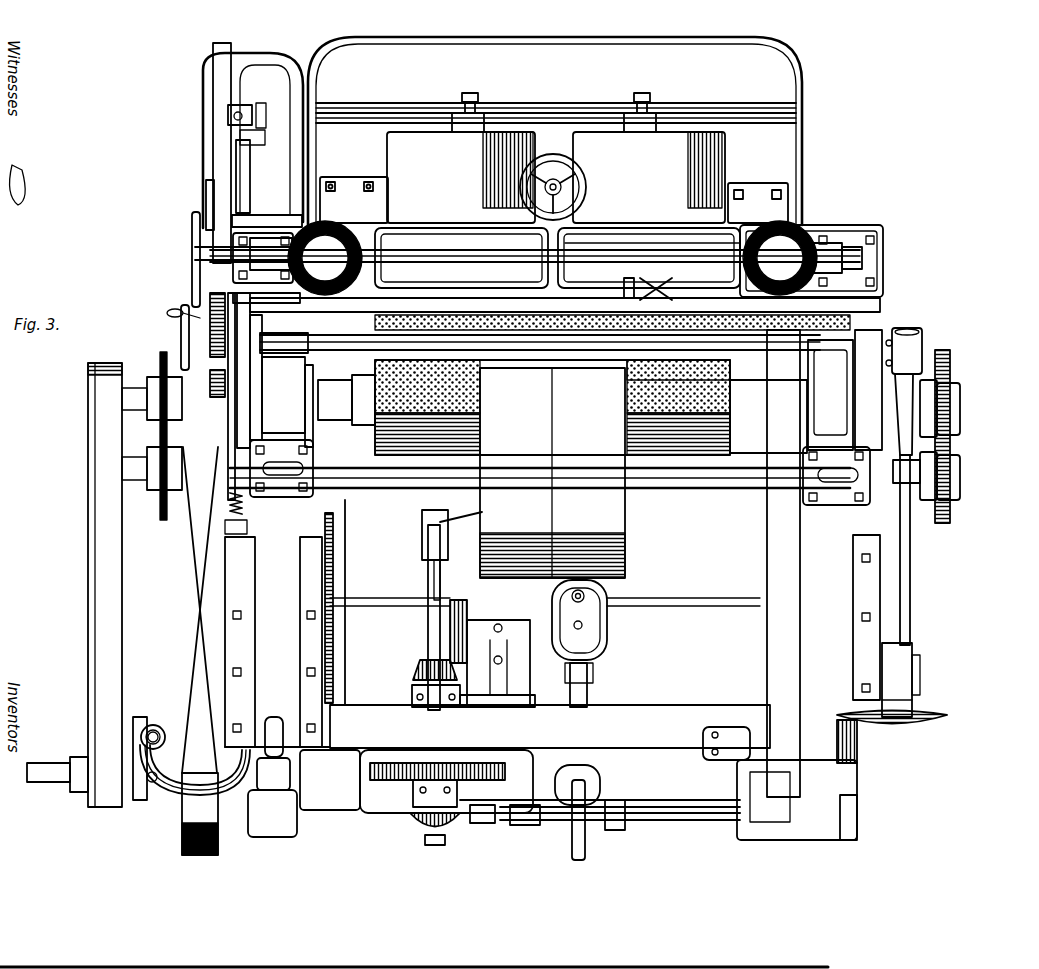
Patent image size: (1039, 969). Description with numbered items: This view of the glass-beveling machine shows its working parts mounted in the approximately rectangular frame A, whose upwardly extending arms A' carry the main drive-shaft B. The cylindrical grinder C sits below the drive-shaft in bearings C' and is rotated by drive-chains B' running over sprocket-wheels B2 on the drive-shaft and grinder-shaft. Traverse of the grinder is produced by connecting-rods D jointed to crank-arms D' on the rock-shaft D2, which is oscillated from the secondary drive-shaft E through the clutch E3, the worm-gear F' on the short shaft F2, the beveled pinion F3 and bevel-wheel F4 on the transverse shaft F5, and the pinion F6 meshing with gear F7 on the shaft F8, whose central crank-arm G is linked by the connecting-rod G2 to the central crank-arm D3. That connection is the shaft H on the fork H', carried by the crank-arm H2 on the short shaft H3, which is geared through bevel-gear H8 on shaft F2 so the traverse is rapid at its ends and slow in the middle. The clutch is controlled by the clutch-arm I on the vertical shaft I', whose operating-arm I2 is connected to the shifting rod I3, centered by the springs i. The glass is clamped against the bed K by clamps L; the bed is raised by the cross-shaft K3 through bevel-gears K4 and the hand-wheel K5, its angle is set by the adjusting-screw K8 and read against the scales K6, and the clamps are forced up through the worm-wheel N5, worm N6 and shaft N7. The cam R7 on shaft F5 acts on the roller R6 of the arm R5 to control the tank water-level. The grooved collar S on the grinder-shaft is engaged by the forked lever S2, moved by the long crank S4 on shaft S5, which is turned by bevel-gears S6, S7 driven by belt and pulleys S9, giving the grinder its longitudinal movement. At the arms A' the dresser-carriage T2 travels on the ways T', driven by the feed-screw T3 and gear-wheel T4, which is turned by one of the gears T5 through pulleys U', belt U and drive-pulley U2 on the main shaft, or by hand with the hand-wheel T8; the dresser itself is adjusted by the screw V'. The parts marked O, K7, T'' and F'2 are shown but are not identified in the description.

The hood O is at (790, 100).
The clamps L is at (556, 177).
The adjusting-screw K8 is at (565, 175).
The bed K is at (466, 298).
The screw V' is at (652, 245).
The gear K7 is at (372, 274).
The cross-shaft K3 is at (760, 207).
The bevel-gears K4 is at (805, 218).
The feed-screw T3 is at (635, 275).
The shaft N7 is at (213, 128).
The gear-wheel T4 is at (228, 116).
The ways T' is at (461, 258).
The worm-wheel N5 is at (206, 190).
The hand-wheel K5 is at (200, 228).
The worm N6 is at (195, 242).
The hand-wheel T8 is at (165, 337).
The gears T5 is at (210, 360).
The pulleys U' is at (266, 368).
The strip T'' is at (612, 314).
The grinder C is at (524, 407).
The scales K6 is at (427, 386).
The dresser-carriage T2 is at (678, 374).
The bearings C' is at (560, 442).
The main drive-shaft B is at (540, 503).
The sprocket-wheels B2 is at (160, 462).
The springs i is at (191, 651).
The belt U is at (221, 520).
The drive-pulley U2 is at (225, 508).
The pinion F6 is at (325, 630).
The gear F7 is at (325, 660).
The frame A is at (550, 775).
The connecting-rods D is at (574, 764).
The crank-arms D' is at (562, 808).
The secondary drive-shaft E is at (55, 748).
The clutch E3 is at (165, 700).
The clutch-arm I is at (192, 793).
The vertical shaft I' is at (151, 737).
The operating-arm I2 is at (135, 788).
The shifting rod I3 is at (147, 715).
The transverse shaft F5 is at (425, 592).
The bevel-wheel F4 is at (450, 643).
The beveled pinion F3 is at (418, 670).
The short shaft F2 is at (412, 690).
The roller R6 is at (422, 530).
The cam R7 is at (432, 570).
The arm R5 is at (473, 519).
The central crank-arm G is at (590, 627).
The connecting-rod G2 is at (590, 695).
The second transverse shaft F8 is at (695, 608).
The upwardly-extending arms A' is at (763, 563).
The belt and pulleys S9 is at (785, 625).
The long crank S4 is at (910, 380).
The drive-chains B' is at (958, 434).
The forked lever S2 is at (940, 412).
The shaft S5 is at (910, 600).
The bevel-gear S6 is at (915, 700).
The bevel-gear S7 is at (870, 745).
The grooved collar S is at (705, 760).
The central crank-arm D3 is at (612, 820).
The rock-shaft D2 is at (690, 825).
The fork H' is at (543, 812).
The short transverse shaft H3 is at (412, 793).
The shaft H is at (403, 836).
The bevel-gear H8 is at (425, 838).
The crank-arm H2 is at (530, 826).
The worm-gear F' is at (437, 750).
The collar F'2 is at (494, 829).